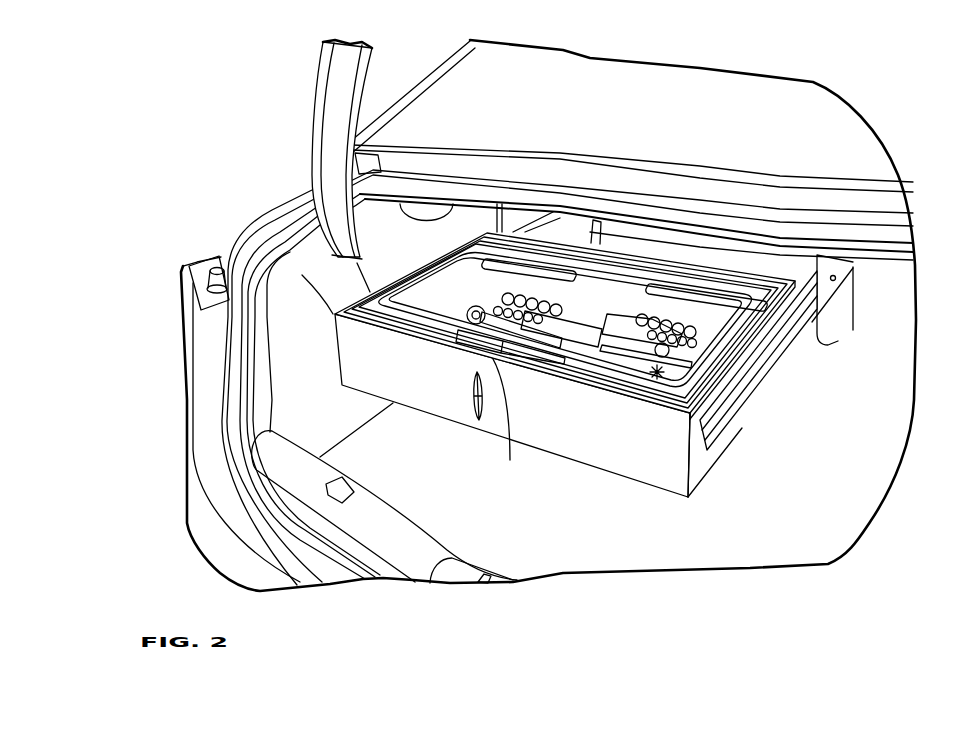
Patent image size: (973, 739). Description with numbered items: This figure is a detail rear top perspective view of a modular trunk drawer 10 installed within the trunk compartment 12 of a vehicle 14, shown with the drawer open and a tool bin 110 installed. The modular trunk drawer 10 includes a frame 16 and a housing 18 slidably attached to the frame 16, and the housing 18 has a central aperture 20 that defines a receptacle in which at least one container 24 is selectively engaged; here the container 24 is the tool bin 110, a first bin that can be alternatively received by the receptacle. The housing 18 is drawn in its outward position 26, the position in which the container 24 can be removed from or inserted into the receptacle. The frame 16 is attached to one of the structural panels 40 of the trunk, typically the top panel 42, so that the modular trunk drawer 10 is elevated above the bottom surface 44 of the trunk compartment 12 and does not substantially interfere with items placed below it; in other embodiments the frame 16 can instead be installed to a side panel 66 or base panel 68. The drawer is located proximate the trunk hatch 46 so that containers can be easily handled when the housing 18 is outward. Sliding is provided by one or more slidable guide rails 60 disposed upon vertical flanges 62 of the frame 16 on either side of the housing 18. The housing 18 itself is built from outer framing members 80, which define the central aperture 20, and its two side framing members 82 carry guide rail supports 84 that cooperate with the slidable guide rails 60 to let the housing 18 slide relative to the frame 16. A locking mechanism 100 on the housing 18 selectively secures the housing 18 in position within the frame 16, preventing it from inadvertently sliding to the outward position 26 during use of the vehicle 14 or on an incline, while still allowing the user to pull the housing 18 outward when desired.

The modular trunk drawer 10 is at (870, 403).
The trunk compartment 12 is at (846, 491).
The vehicle 14 is at (270, 209).
The frame 16 is at (860, 271).
The housing 18 is at (622, 481).
The central aperture 20 is at (333, 325).
The container 24 is at (447, 322).
The outward position 26 is at (474, 449).
The structural panels 40 is at (305, 277).
The top panel 42 is at (345, 185).
The bottom surface 44 is at (513, 537).
The trunk hatch 46 is at (330, 92).
The slidable guide rails 60 is at (550, 230).
The vertical flanges 62 is at (822, 308).
The side panel 66 is at (293, 392).
The base panel 68 is at (572, 548).
The outer framing members 80 is at (656, 462).
The side framing members 82 is at (693, 465).
The guide rail supports 84 is at (716, 432).
The locking mechanism 100 is at (508, 420).
The tool bin 110 is at (717, 335).